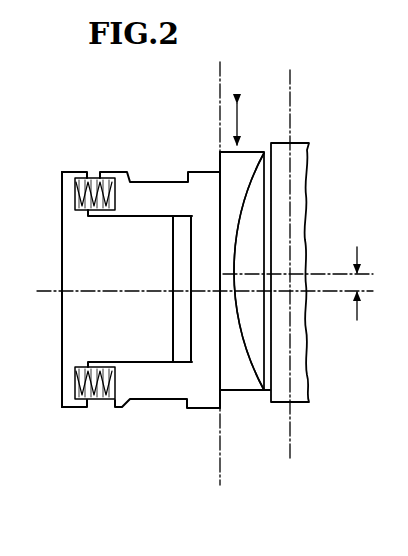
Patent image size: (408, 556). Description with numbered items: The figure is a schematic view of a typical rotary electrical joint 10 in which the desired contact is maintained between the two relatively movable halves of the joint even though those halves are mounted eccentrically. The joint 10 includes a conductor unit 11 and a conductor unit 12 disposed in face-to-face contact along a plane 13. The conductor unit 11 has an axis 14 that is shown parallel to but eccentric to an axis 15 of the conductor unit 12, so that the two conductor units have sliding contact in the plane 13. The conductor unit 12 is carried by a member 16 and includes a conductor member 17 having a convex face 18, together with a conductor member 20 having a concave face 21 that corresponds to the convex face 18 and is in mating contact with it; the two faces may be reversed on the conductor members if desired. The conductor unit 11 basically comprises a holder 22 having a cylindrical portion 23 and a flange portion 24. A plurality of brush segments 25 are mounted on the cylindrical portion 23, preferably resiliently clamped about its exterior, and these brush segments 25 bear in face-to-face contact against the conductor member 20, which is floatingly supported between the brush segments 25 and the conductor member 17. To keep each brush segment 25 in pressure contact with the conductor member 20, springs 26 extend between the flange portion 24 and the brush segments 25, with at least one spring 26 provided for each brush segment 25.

The rotary electrical joint 10 is at (186, 138).
The conductor unit 11 is at (163, 416).
The conductor unit 12 is at (272, 433).
The plane 13 is at (215, 470).
The axis 14 is at (127, 292).
The axis 15 is at (323, 273).
The member 16 is at (308, 183).
The conductor member 17 is at (260, 347).
The convex face 18 is at (243, 206).
The conductor member 20 is at (241, 385).
The concave face 21 is at (247, 355).
The holder 22 is at (86, 328).
The cylindrical portion 23 is at (143, 224).
The flange portion 24 is at (66, 167).
The brush segments 25 is at (125, 408).
The springs 26 is at (90, 193).